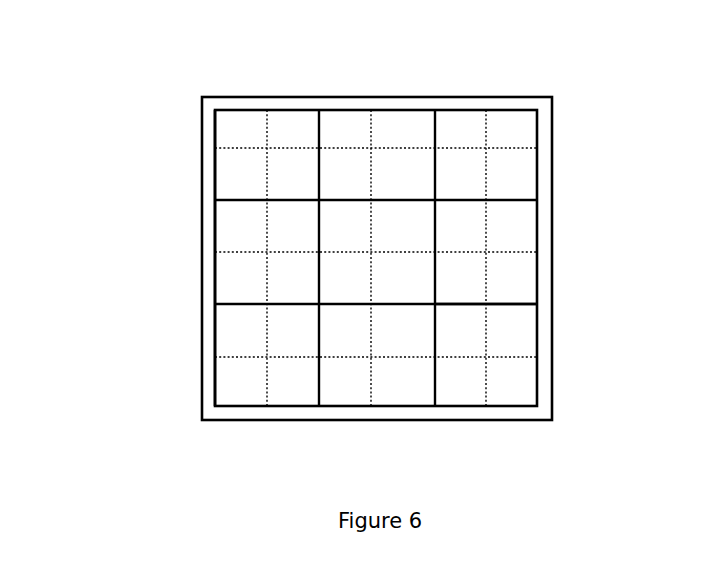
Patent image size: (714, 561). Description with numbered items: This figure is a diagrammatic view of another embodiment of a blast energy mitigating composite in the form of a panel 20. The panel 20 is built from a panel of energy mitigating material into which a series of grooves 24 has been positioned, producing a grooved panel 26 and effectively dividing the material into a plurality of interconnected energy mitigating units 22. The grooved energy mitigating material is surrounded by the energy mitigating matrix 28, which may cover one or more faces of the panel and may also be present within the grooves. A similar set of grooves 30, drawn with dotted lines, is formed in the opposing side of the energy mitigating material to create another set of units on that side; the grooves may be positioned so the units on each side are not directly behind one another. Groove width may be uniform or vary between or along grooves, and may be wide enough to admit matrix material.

The panel 20 is at (156, 69).
The energy mitigating units 22 is at (225, 269).
The grooves 24 is at (517, 304).
The grooved panel 26 is at (208, 175).
The energy mitigating matrix 28 is at (543, 177).
The grooves 30 is at (485, 137).